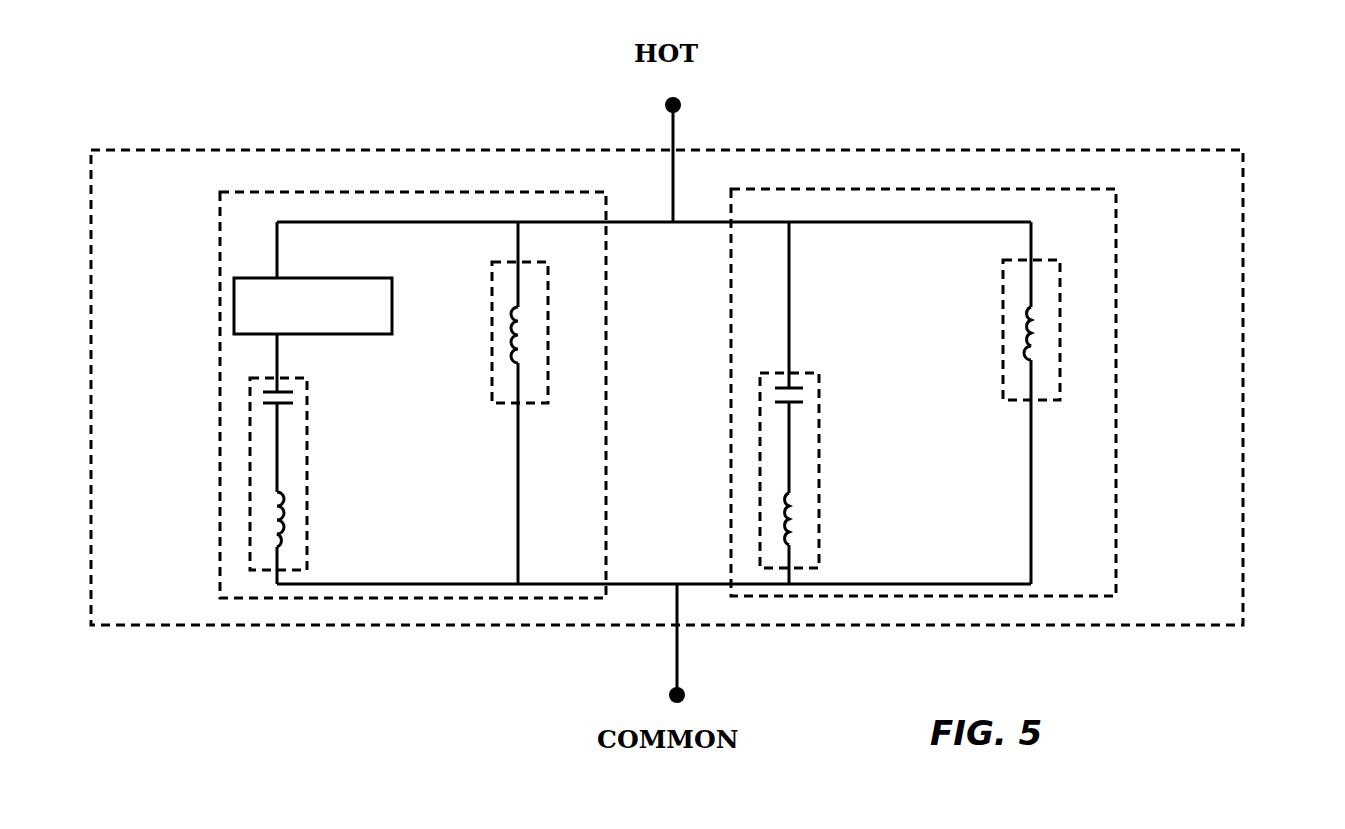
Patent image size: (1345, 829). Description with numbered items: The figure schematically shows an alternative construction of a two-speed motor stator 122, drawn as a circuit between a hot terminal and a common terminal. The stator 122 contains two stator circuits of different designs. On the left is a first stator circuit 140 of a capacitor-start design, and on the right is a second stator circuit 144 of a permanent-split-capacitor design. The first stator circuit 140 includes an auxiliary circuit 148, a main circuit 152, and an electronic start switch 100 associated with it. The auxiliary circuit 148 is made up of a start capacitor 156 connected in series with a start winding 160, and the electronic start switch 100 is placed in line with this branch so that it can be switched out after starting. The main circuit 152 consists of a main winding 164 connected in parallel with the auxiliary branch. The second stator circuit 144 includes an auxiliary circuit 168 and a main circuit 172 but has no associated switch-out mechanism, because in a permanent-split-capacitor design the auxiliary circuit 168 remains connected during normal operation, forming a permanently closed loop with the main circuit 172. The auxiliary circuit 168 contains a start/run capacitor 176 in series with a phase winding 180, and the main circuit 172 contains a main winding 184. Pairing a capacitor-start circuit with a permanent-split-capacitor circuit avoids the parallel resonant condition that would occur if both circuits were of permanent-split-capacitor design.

The electronic start switch 100 is at (318, 278).
The stator 122 is at (1245, 283).
The first stator circuit 140 is at (218, 258).
The second stator circuit 144 is at (1118, 389).
The auxiliary circuit 148 is at (341, 467).
The main circuit 152 is at (478, 403).
The start capacitor 156 is at (284, 390).
The start winding 160 is at (280, 524).
The main winding 164 is at (512, 358).
The auxiliary circuit 168 is at (850, 403).
The main circuit 172 is at (976, 403).
The start/run capacitor 176 is at (800, 402).
The phase winding 180 is at (790, 526).
The main winding 184 is at (1026, 346).